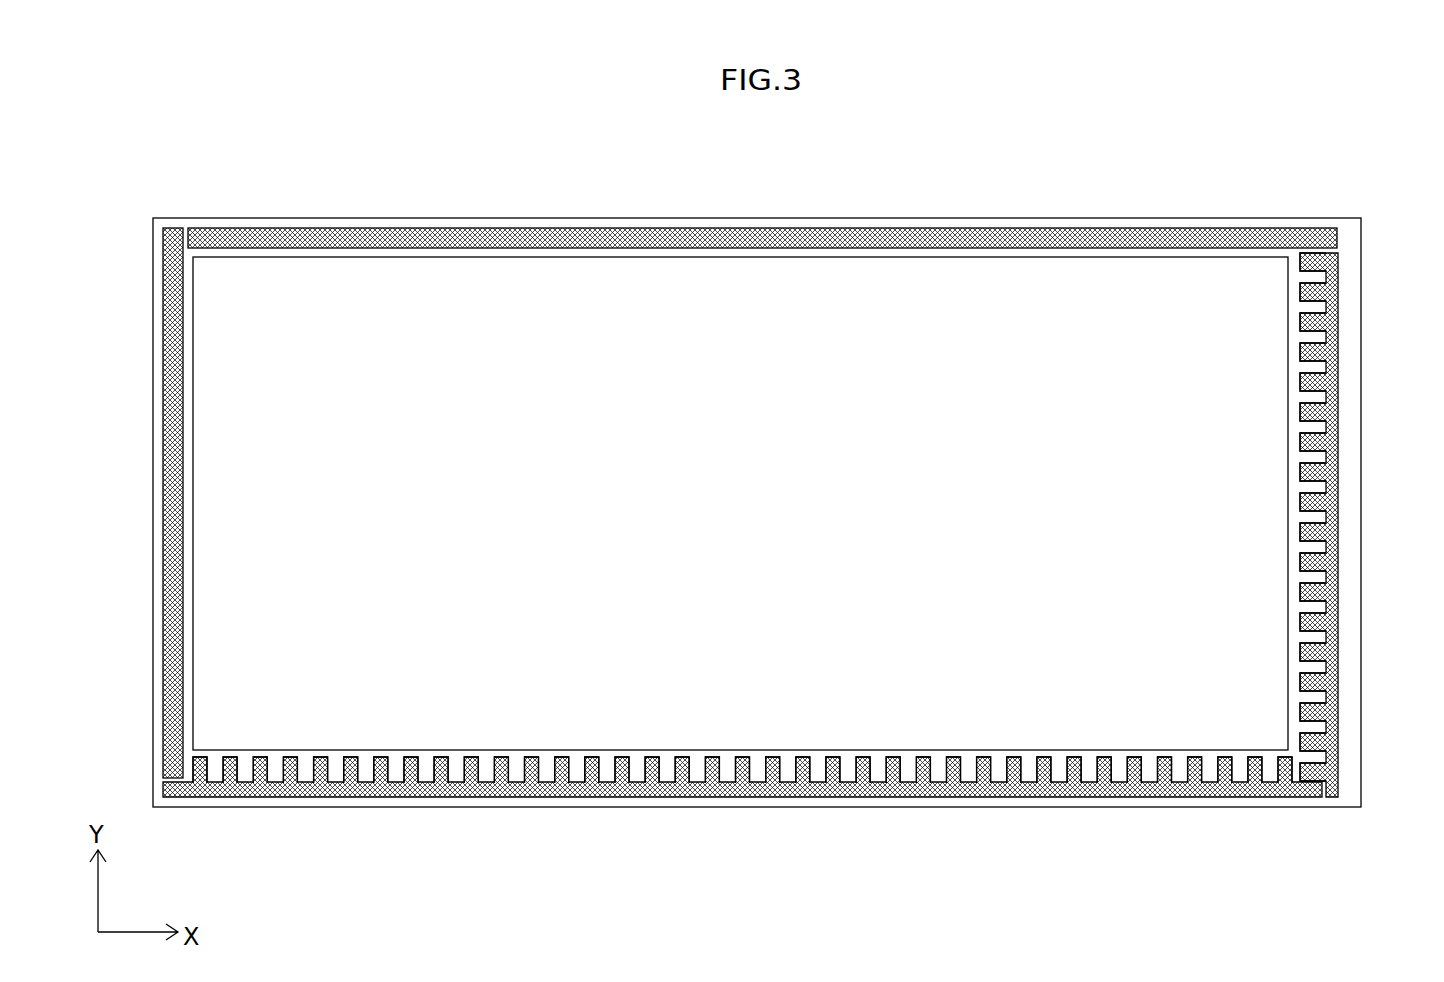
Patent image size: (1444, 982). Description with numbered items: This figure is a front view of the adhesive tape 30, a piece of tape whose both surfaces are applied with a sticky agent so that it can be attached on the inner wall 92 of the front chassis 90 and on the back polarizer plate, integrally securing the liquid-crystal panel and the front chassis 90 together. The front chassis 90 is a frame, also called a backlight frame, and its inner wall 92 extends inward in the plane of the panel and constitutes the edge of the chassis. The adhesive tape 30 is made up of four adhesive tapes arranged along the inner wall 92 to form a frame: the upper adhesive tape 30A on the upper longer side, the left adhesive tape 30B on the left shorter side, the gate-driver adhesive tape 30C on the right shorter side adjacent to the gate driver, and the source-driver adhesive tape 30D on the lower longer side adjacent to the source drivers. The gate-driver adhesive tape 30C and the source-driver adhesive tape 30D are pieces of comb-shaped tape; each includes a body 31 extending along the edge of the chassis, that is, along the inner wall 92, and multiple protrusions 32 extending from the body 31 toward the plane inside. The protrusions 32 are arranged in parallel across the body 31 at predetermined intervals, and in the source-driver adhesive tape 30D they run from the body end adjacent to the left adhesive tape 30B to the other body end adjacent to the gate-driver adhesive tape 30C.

The adhesive tape 30 is at (752, 525).
The upper adhesive tape 30A is at (1021, 235).
The left adhesive tape 30B is at (170, 460).
The gate-driver adhesive tape 30C is at (800, 560).
The source-driver adhesive tape 30D is at (732, 790).
The body 31 is at (565, 790).
The protrusions 32 is at (592, 757).
The front chassis 90 is at (757, 557).
The inner wall 92 is at (925, 802).